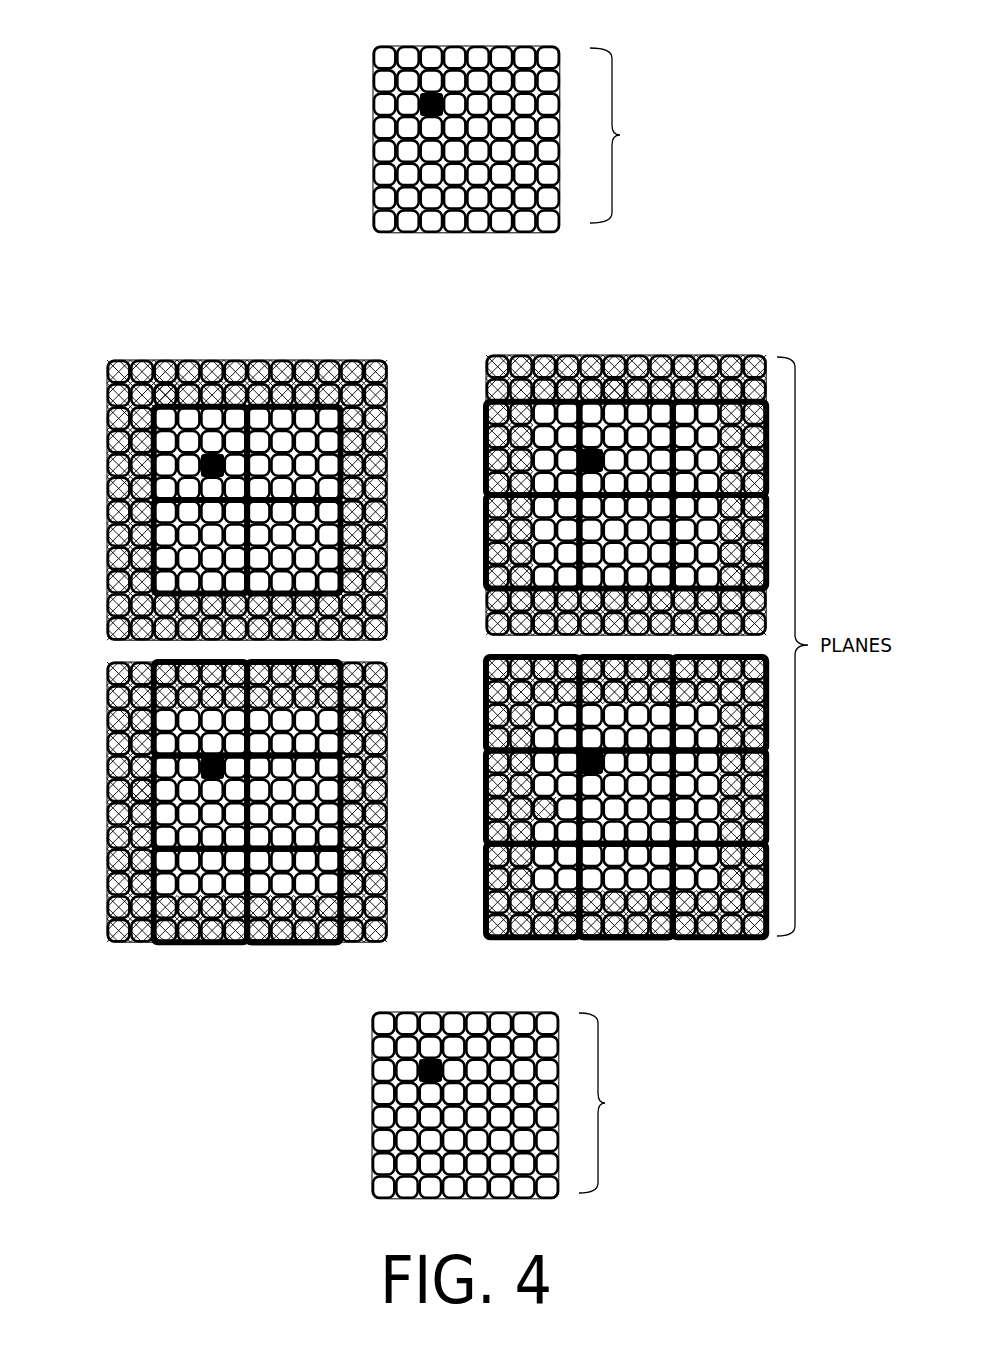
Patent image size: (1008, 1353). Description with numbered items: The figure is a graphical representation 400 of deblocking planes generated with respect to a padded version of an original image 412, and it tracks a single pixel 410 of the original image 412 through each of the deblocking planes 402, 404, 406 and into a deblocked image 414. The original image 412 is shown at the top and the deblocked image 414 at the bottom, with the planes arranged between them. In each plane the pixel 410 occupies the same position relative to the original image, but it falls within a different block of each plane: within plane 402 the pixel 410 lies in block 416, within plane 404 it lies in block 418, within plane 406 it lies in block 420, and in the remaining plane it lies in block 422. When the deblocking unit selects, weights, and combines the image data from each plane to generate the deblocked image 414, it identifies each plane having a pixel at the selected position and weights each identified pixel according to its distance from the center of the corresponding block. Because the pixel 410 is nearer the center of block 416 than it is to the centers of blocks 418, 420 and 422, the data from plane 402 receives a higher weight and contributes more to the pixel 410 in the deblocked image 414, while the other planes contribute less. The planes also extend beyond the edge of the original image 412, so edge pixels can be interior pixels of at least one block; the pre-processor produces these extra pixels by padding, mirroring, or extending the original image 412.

The graphical representation 400 is at (156, 45).
The deblocking plane 402 is at (233, 340).
The deblocking plane 404 is at (638, 319).
The deblocking plane 406 is at (257, 981).
The pixel 410 is at (421, 105).
The original image 412 is at (695, 172).
The deblocked image 414 is at (662, 1112).
The block 416 is at (165, 395).
The block 418 is at (610, 395).
The block 420 is at (150, 795).
The block 422 is at (560, 800).